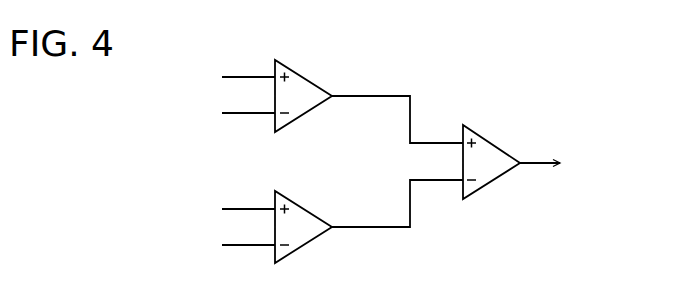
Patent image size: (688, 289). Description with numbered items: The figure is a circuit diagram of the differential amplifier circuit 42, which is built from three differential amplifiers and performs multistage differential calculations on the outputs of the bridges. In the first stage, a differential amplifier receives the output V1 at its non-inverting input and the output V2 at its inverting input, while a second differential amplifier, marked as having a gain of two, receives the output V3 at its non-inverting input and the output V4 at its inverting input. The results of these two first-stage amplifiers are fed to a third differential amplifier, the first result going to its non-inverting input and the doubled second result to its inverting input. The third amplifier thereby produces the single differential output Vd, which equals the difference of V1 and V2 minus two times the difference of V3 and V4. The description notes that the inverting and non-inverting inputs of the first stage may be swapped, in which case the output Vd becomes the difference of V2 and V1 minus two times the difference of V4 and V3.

The differential amplifier circuit 42 is at (418, 140).
The output V1 is at (233, 78).
The output V2 is at (233, 114).
The output V3 is at (233, 209).
The output V4 is at (233, 246).
The differential output Vd is at (582, 162).